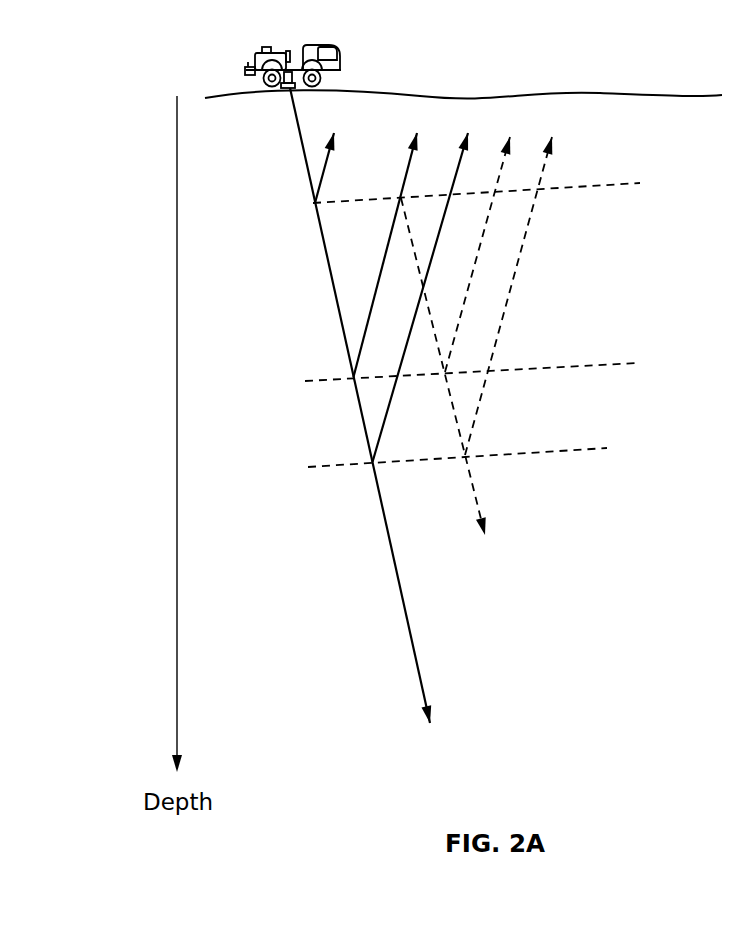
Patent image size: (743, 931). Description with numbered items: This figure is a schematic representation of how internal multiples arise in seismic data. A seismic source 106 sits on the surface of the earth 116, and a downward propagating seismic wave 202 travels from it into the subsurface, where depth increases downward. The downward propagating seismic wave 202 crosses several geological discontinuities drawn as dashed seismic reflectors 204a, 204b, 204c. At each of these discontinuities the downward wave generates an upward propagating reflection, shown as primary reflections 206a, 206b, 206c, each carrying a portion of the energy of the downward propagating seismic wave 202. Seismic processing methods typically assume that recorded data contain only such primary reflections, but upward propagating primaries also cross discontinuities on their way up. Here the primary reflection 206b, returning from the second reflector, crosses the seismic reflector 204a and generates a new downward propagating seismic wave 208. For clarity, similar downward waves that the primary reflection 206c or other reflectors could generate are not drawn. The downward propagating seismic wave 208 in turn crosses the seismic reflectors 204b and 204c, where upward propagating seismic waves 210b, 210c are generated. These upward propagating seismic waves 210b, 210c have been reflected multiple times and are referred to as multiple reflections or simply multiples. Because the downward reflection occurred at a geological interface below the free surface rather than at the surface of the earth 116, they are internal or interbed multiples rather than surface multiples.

The seismic source 106 is at (325, 43).
The surface of the earth 116 is at (598, 93).
The downward propagating seismic wave 202 is at (407, 628).
The seismic reflector 204a is at (619, 186).
The seismic reflector 204b is at (633, 364).
The seismic reflector 204c is at (595, 449).
The primary reflection 206a is at (318, 182).
The primary reflection 206b is at (363, 338).
The primary reflection 206c is at (385, 430).
The downward propagating seismic wave 208 is at (427, 300).
The upward propagating seismic wave 210b is at (488, 223).
The upward propagating seismic wave 210c is at (517, 273).